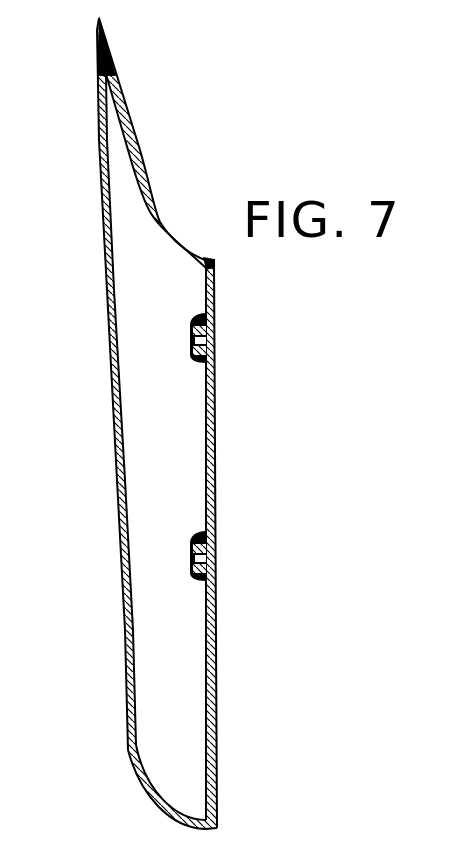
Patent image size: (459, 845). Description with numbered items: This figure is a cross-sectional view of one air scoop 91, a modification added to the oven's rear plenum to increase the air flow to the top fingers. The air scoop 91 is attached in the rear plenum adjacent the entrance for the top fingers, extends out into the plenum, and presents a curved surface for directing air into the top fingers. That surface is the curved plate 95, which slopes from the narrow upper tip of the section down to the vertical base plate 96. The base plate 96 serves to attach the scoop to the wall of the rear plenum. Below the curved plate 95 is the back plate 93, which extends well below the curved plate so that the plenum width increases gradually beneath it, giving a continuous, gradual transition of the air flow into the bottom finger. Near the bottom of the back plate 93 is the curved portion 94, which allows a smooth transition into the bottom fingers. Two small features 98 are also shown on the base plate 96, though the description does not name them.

The air scoop 91 is at (146, 110).
The back plate 93 is at (105, 220).
The curved portion 94 is at (133, 778).
The curved plate 95 is at (147, 169).
The base plate 96 is at (214, 497).
The mounting bosses 98 is at (193, 350).